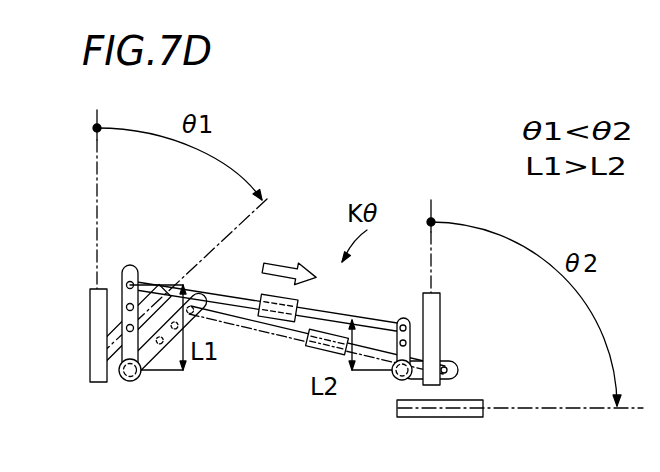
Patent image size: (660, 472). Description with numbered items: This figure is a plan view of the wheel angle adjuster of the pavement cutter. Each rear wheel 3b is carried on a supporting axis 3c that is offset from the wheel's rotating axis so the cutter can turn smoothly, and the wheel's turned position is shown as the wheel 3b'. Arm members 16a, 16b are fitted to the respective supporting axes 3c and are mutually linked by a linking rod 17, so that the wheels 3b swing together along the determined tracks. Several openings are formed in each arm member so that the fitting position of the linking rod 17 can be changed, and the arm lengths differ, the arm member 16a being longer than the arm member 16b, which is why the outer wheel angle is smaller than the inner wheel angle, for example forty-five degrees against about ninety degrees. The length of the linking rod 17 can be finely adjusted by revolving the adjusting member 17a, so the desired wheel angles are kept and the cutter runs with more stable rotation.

The rear wheel 3b is at (268, 329).
The rear wheel in adjusted position 3b' is at (311, 307).
The supporting axis 3c is at (140, 381).
The arm member 16a is at (124, 265).
The arm member 16b is at (402, 318).
The linking rod 17 is at (233, 293).
The adjusting member 17a is at (278, 330).